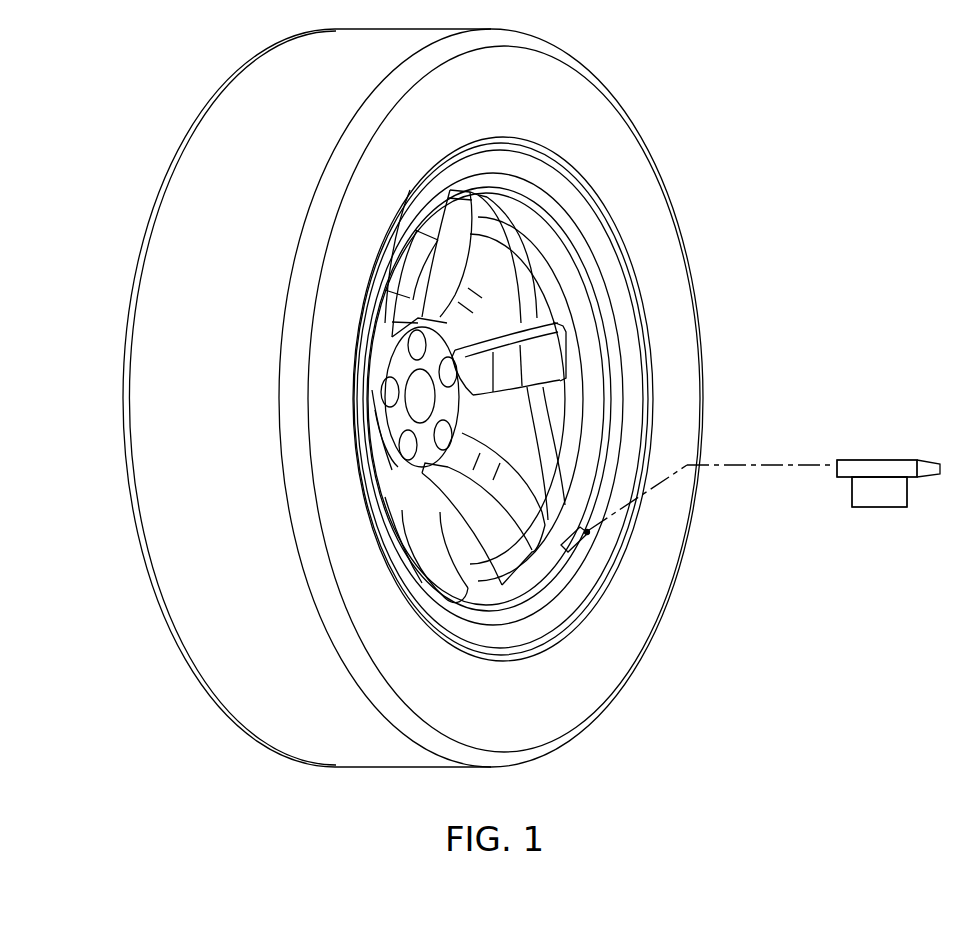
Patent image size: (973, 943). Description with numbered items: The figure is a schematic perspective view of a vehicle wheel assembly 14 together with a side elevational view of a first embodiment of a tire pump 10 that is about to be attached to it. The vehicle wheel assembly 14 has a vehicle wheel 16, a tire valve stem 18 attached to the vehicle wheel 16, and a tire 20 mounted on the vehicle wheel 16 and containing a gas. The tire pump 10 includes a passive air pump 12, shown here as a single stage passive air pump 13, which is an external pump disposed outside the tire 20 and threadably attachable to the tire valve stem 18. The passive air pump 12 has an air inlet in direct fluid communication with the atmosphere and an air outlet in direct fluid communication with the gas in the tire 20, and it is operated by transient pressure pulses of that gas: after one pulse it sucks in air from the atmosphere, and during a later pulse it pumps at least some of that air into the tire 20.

The tire pump 10 is at (854, 517).
The passive air pump 12 is at (856, 536).
The single stage passive air pump 13 is at (905, 536).
The vehicle wheel assembly 14 is at (459, 398).
The vehicle wheel 16 is at (452, 408).
The tire valve stem 18 is at (580, 548).
The tire 20 is at (184, 160).